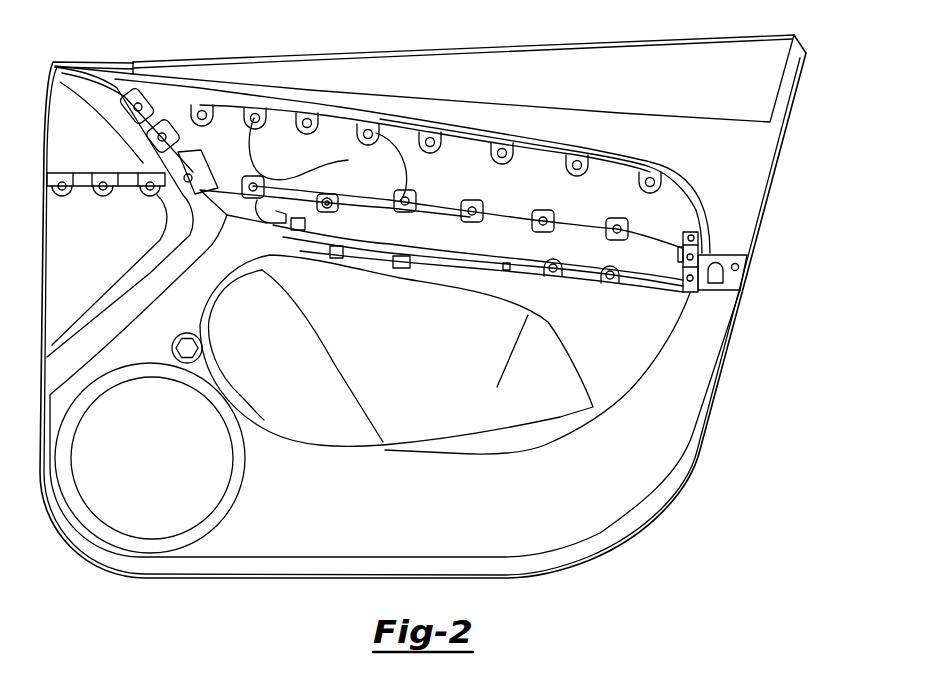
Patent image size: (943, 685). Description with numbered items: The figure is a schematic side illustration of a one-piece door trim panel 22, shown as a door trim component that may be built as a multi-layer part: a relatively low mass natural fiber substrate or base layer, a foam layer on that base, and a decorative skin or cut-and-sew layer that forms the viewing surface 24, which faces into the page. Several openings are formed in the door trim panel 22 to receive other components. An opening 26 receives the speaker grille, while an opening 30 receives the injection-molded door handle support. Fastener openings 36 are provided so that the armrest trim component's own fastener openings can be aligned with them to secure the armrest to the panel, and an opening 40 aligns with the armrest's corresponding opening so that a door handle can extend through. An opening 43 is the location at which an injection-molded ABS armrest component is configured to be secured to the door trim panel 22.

The door trim panel 22 is at (507, 44).
The viewing surface 24 is at (662, 448).
The opening 26 is at (88, 498).
The opening 30 is at (254, 183).
The fastener openings 36 is at (327, 198).
The opening 40 is at (336, 140).
The opening 43 is at (371, 243).